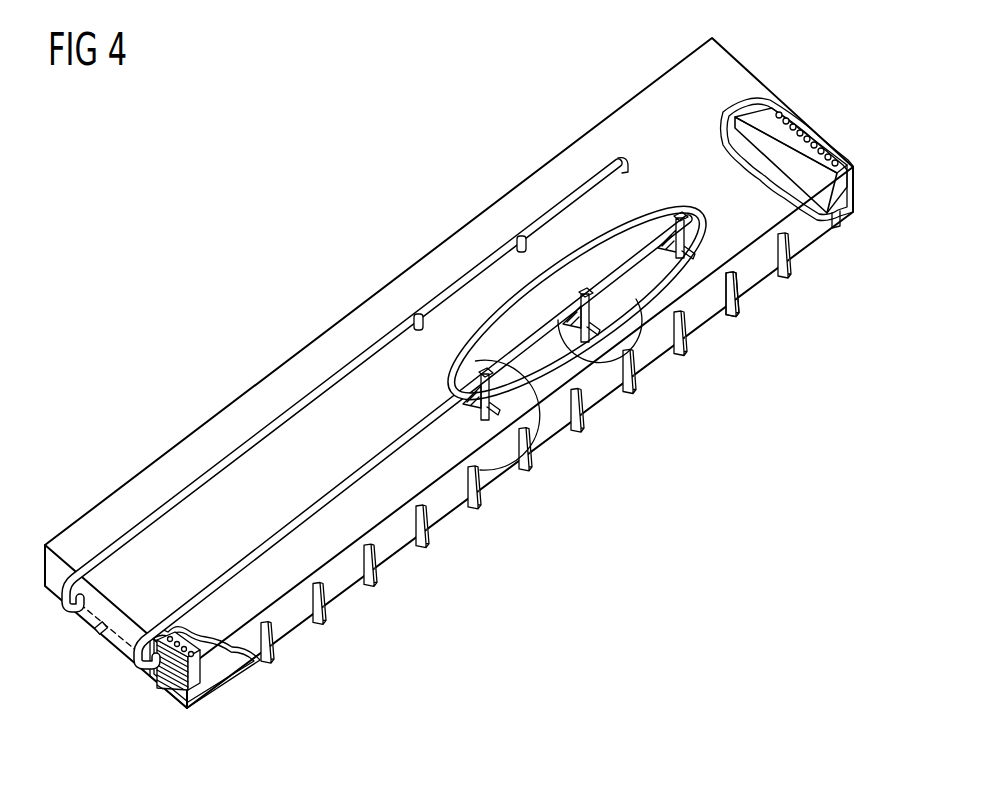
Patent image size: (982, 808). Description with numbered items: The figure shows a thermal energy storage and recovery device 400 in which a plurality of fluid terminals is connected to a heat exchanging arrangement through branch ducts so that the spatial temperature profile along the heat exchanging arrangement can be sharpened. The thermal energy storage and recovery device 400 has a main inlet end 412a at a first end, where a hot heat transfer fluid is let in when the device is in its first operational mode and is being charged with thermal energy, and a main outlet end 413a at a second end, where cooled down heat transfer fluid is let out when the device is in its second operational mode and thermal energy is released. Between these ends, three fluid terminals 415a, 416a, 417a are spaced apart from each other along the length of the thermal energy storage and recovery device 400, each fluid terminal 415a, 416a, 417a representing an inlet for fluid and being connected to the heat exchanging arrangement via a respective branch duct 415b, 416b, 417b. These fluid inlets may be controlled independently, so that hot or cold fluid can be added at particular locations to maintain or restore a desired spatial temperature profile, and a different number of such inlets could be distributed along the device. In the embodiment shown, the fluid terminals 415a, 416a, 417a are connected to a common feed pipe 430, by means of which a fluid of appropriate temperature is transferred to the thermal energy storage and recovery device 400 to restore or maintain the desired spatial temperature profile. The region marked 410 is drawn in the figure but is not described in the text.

The thermal energy storage and recovery device 400 is at (330, 208).
The fastening loop 410 is at (668, 216).
The main inlet end 412a is at (134, 698).
The main outlet end 413a is at (810, 86).
The fluid terminal 415a is at (698, 226).
The branch duct 415b is at (742, 290).
The fluid terminal 416a is at (632, 347).
The branch duct 416b is at (566, 326).
The fluid terminal 417a is at (538, 429).
The branch duct 417b is at (484, 470).
The common feed pipe 430 is at (346, 474).